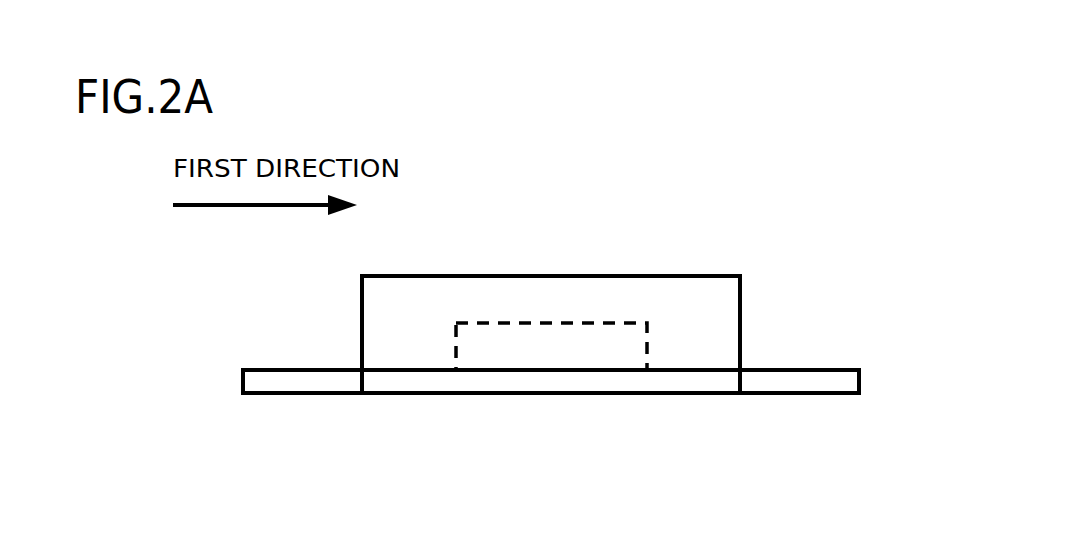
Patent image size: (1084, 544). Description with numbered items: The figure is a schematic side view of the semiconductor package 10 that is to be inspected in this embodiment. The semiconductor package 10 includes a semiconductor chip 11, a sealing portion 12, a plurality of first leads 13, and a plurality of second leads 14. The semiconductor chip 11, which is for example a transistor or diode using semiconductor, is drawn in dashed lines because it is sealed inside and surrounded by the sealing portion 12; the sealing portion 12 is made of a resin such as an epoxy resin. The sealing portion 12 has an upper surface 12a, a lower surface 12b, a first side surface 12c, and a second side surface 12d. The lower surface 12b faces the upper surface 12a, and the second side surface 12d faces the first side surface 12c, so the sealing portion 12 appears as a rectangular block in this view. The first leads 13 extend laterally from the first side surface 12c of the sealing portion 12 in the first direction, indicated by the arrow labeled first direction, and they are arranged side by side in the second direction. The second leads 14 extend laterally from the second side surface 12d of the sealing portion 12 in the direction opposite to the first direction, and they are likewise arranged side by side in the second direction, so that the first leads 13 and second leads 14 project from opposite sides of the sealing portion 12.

The semiconductor package 10 is at (818, 248).
The semiconductor chip 11 is at (550, 347).
The sealing portion 12 is at (693, 322).
The upper surface 12a is at (472, 275).
The lower surface 12b is at (482, 395).
The first side surface 12c is at (740, 320).
The second side surface 12d is at (361, 320).
The first leads 13 is at (823, 383).
The second leads 14 is at (278, 382).